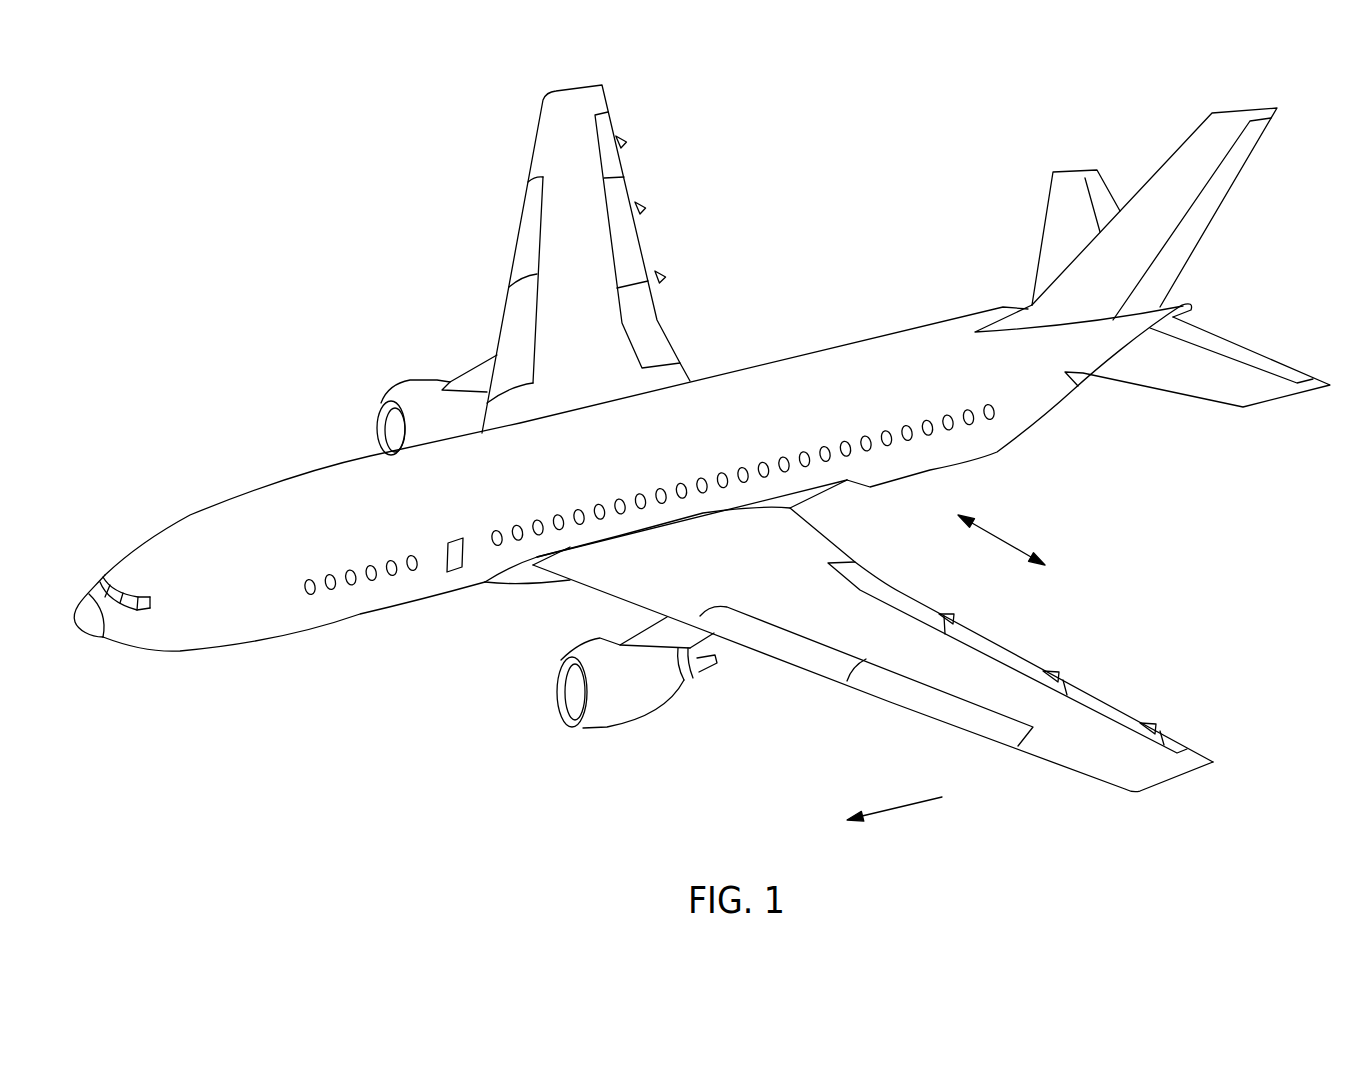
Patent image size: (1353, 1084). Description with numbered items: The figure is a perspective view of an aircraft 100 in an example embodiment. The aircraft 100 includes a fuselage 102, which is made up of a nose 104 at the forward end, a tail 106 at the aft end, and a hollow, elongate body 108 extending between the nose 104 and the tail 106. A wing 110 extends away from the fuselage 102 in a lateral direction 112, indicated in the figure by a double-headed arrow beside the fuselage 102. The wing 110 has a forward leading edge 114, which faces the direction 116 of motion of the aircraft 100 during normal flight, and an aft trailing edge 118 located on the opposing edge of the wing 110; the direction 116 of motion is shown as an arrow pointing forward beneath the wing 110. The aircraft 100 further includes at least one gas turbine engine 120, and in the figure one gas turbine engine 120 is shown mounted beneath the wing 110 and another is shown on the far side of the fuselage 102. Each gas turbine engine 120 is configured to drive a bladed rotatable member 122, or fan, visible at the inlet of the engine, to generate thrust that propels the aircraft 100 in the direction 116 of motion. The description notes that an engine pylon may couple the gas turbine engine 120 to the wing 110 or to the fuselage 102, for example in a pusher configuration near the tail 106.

The aircraft 100 is at (220, 308).
The fuselage 102 is at (780, 378).
The nose 104 is at (140, 557).
The tail 106 is at (1077, 392).
The hollow, elongate body 108 is at (522, 496).
The wing 110 is at (849, 660).
The lateral direction 112 is at (1000, 537).
The forward leading edge 114 is at (1063, 767).
The direction of motion 116 is at (897, 807).
The aft trailing edge 118 is at (1120, 709).
The gas turbine engine 120 is at (416, 398).
The bladed rotatable member 122 is at (570, 690).